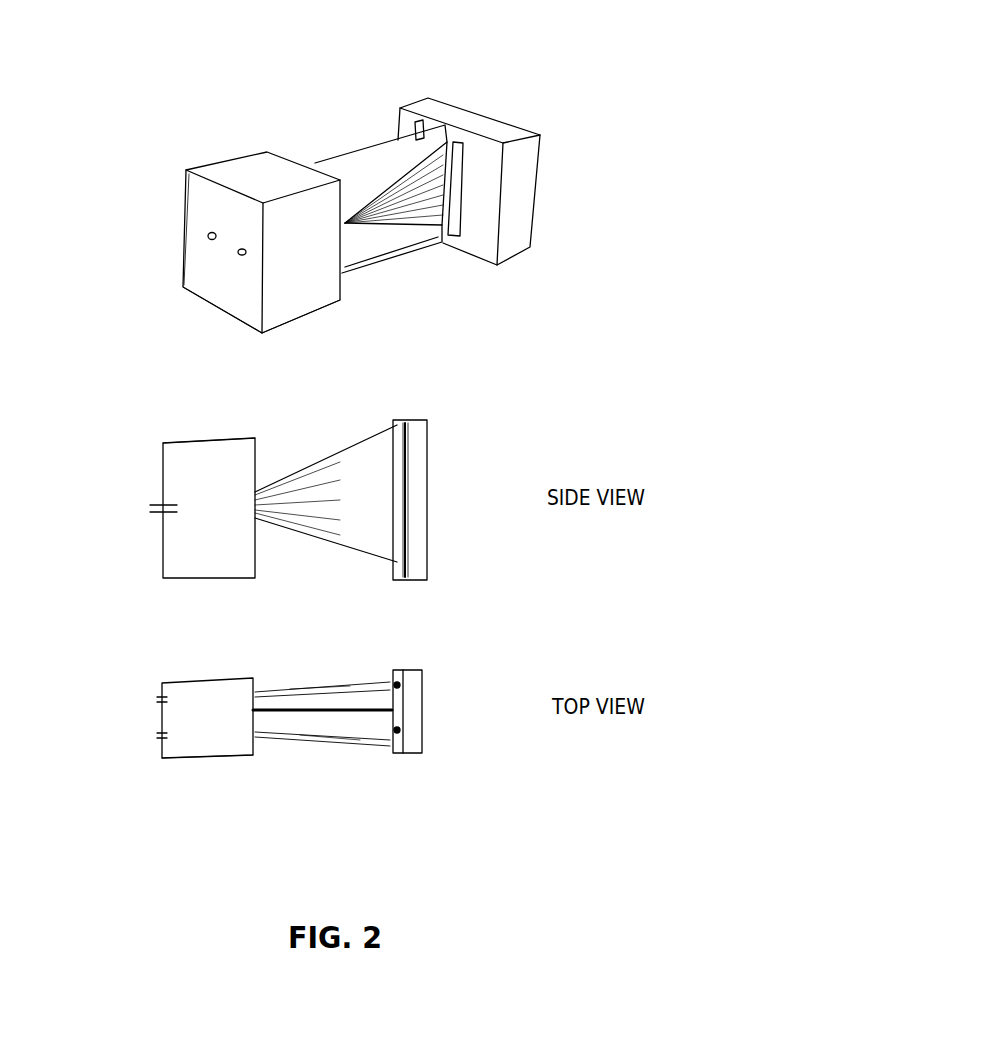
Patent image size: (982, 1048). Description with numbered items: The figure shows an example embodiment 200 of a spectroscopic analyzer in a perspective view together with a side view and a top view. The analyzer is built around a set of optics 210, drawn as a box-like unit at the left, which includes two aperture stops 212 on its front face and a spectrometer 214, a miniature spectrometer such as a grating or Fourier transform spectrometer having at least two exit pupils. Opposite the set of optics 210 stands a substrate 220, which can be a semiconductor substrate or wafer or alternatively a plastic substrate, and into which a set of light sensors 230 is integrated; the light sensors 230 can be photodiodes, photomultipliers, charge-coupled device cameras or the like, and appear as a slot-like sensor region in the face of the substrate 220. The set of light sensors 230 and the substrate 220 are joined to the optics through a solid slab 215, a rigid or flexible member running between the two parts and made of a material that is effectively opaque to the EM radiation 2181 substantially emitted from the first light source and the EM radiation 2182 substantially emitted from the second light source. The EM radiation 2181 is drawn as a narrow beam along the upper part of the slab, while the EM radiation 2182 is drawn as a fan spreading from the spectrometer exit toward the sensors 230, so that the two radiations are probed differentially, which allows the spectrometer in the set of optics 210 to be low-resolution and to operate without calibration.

The example embodiment of spectroscopic analyzer 200 is at (635, 53).
The set of optics 210 is at (220, 153).
The aperture stops 212 is at (233, 252).
The spectrometer 214 is at (313, 310).
The solid slab 215 is at (338, 158).
The EM radiation substantially emitted from the first light source 2181 is at (388, 137).
The EM radiation substantially emitted from the second light source 2182 is at (403, 230).
The substrate 220 is at (517, 167).
The set of light sensors 230 is at (458, 235).